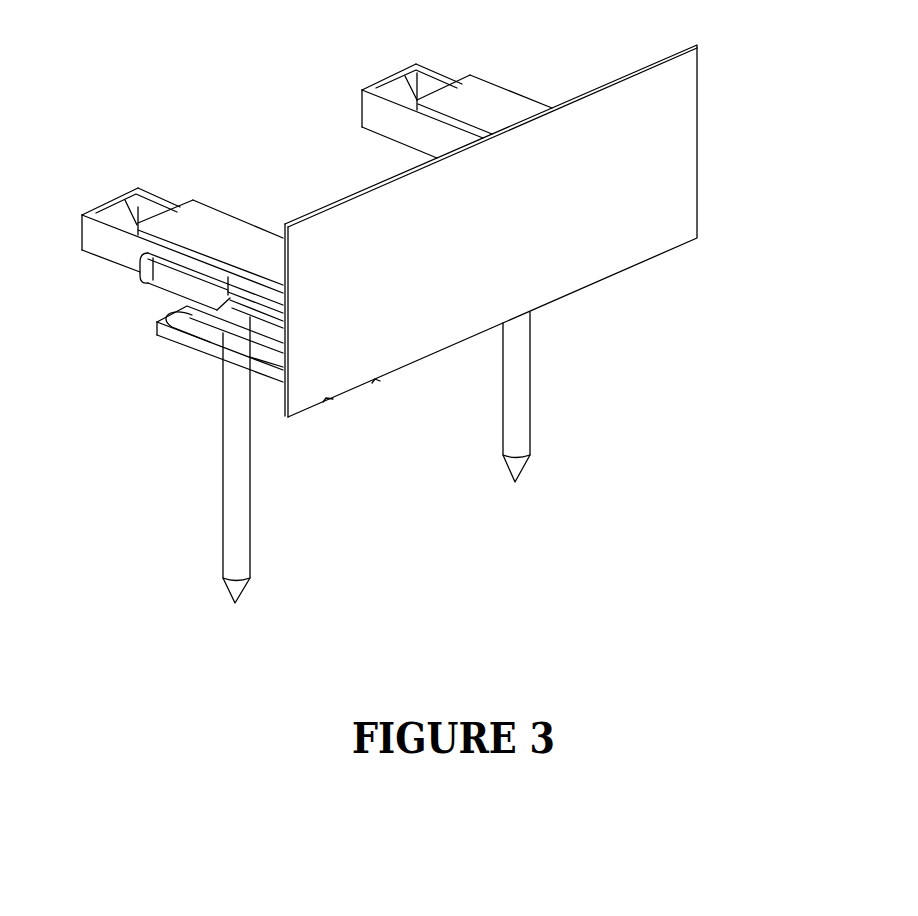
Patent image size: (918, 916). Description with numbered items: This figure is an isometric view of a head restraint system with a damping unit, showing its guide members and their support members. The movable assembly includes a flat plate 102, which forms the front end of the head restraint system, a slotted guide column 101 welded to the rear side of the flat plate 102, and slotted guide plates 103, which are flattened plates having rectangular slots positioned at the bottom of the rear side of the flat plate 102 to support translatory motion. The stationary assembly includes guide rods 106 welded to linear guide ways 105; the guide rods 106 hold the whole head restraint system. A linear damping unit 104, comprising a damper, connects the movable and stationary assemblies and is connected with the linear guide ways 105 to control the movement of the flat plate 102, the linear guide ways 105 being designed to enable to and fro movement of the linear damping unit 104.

The slotted guide column 101 is at (212, 228).
The flat plate 102 is at (673, 177).
The slotted guide plate 103 is at (173, 335).
The linear damping unit 104 is at (193, 290).
The linear guide way 105 is at (93, 230).
The guide rod 106 is at (238, 528).